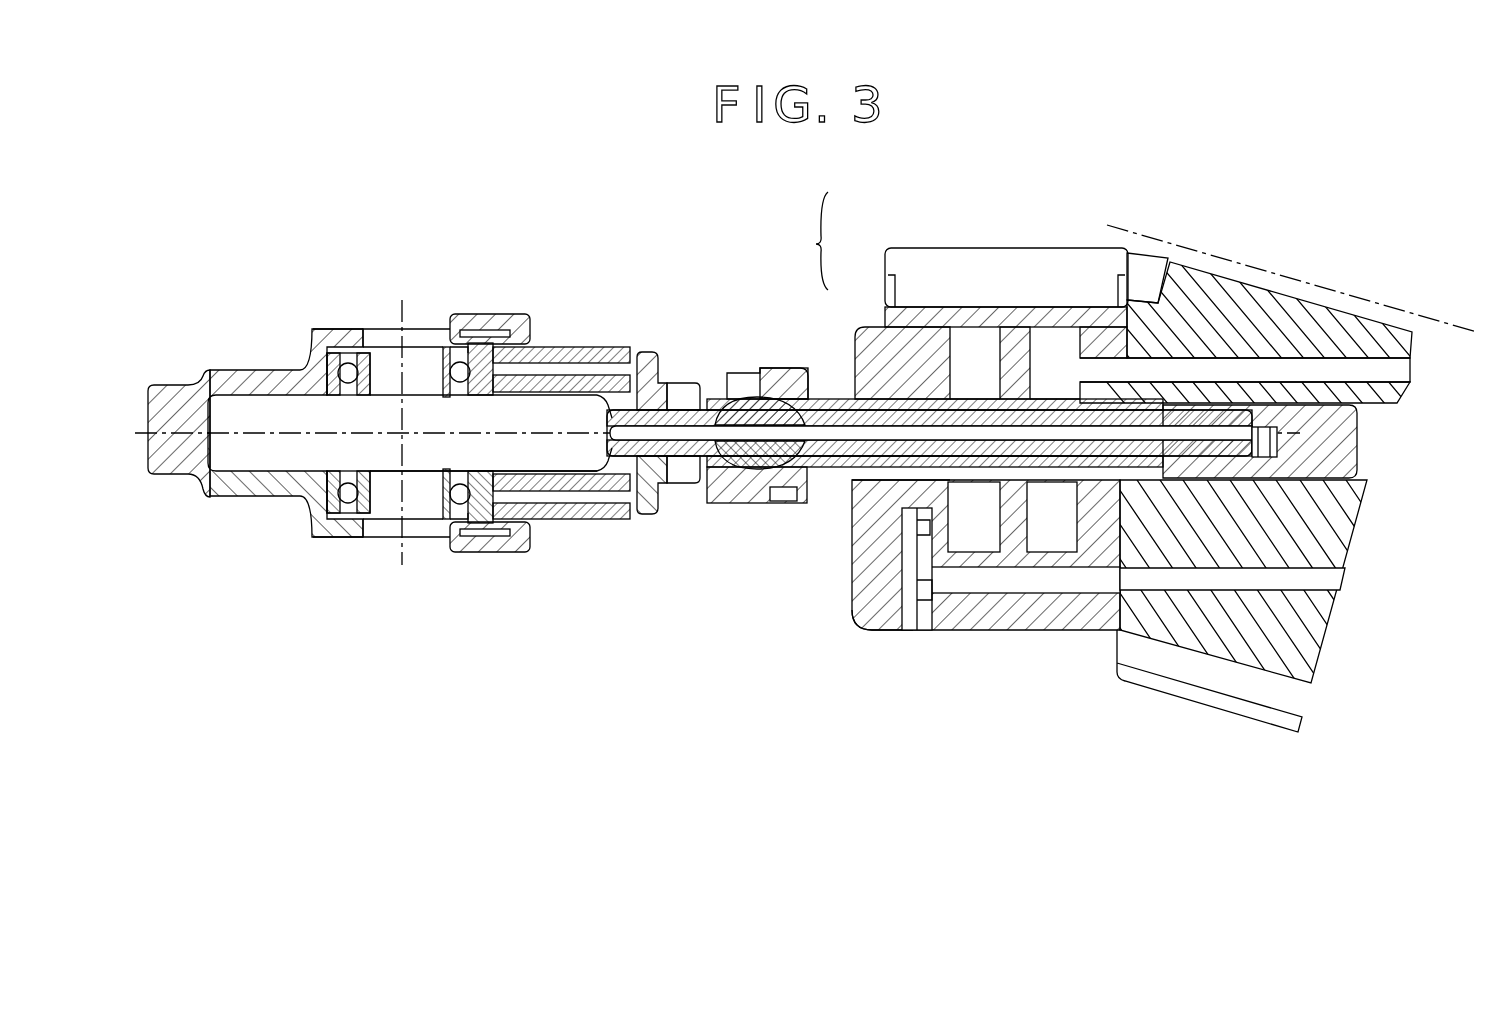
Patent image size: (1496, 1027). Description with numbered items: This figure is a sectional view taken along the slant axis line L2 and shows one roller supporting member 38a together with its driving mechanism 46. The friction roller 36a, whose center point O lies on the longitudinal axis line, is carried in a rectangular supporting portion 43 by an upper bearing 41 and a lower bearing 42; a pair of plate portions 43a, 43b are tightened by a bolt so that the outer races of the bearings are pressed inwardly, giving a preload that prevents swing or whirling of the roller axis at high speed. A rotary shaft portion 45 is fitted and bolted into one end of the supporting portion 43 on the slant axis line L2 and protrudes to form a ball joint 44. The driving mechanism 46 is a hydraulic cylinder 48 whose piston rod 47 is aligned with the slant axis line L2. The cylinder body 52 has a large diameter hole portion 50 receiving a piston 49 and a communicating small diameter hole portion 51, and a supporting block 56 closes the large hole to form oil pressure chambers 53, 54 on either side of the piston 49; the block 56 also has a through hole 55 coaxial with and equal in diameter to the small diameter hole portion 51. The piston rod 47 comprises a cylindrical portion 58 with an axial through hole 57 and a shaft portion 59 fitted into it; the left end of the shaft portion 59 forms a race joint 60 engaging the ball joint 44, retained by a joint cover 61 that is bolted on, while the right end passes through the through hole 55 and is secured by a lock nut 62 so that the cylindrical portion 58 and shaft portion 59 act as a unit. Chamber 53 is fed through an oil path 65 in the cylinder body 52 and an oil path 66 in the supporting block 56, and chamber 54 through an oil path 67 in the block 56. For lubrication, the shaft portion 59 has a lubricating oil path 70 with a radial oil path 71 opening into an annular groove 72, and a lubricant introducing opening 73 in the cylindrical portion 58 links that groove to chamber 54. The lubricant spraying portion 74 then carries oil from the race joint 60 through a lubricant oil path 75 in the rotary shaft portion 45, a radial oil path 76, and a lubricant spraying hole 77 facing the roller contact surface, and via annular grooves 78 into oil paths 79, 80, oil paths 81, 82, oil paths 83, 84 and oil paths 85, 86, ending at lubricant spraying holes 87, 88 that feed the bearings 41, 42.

The friction roller 36a is at (267, 457).
The roller supporting member 38a is at (205, 368).
The bearing 41 is at (327, 367).
The bearing 42 is at (347, 487).
The supporting portion 43 is at (323, 338).
The plate portion 43a is at (470, 314).
The plate portion 43b is at (467, 553).
The ball joint 44 is at (743, 487).
The rotary shaft portion 45 is at (660, 470).
The driving mechanism 46 is at (1176, 224).
The piston rod 47 is at (799, 241).
The hydraulic cylinder 48 is at (1040, 617).
The piston 49 is at (1002, 360).
The large diameter hole portion 50 is at (947, 583).
The small diameter hole portion 51 is at (860, 480).
The cylinder body 52 is at (873, 608).
The oil pressure chamber 53 is at (955, 360).
The oil pressure chamber 54 is at (1040, 347).
The through hole 55 is at (1357, 465).
The supporting block 56 is at (1260, 307).
The through hole 57 is at (1125, 420).
The cylindrical portion 58 is at (885, 365).
The shaft portion 59 is at (905, 350).
The race joint 60 is at (782, 487).
The joint cover 61 is at (713, 500).
The lock nut 62 is at (1357, 420).
The oil path 65 is at (923, 537).
The oil path 66 is at (1333, 582).
The oil path 67 is at (1390, 372).
The lubricating oil path 70 is at (880, 405).
The oil path 71 is at (987, 360).
The annular groove 72 is at (1090, 395).
The lubricant introducing opening 73 is at (1053, 360).
The lubricant spraying portion 74 is at (680, 390).
The lubricant oil path 75 is at (745, 385).
The oil path 76 is at (675, 398).
The lubricant spraying hole 77 is at (590, 487).
The annular groove 78 is at (645, 375).
The oil path 79 is at (648, 385).
The oil path 80 is at (625, 487).
The oil path 81 is at (557, 360).
The oil path 82 is at (565, 500).
The oil path 83 is at (512, 336).
The oil path 84 is at (497, 540).
The oil path 85 is at (490, 333).
The oil path 86 is at (485, 533).
The lubricant spraying hole 87 is at (433, 335).
The lubricant spraying hole 88 is at (443, 523).
The center point O is at (398, 340).
The slant axis line L2 is at (633, 380).